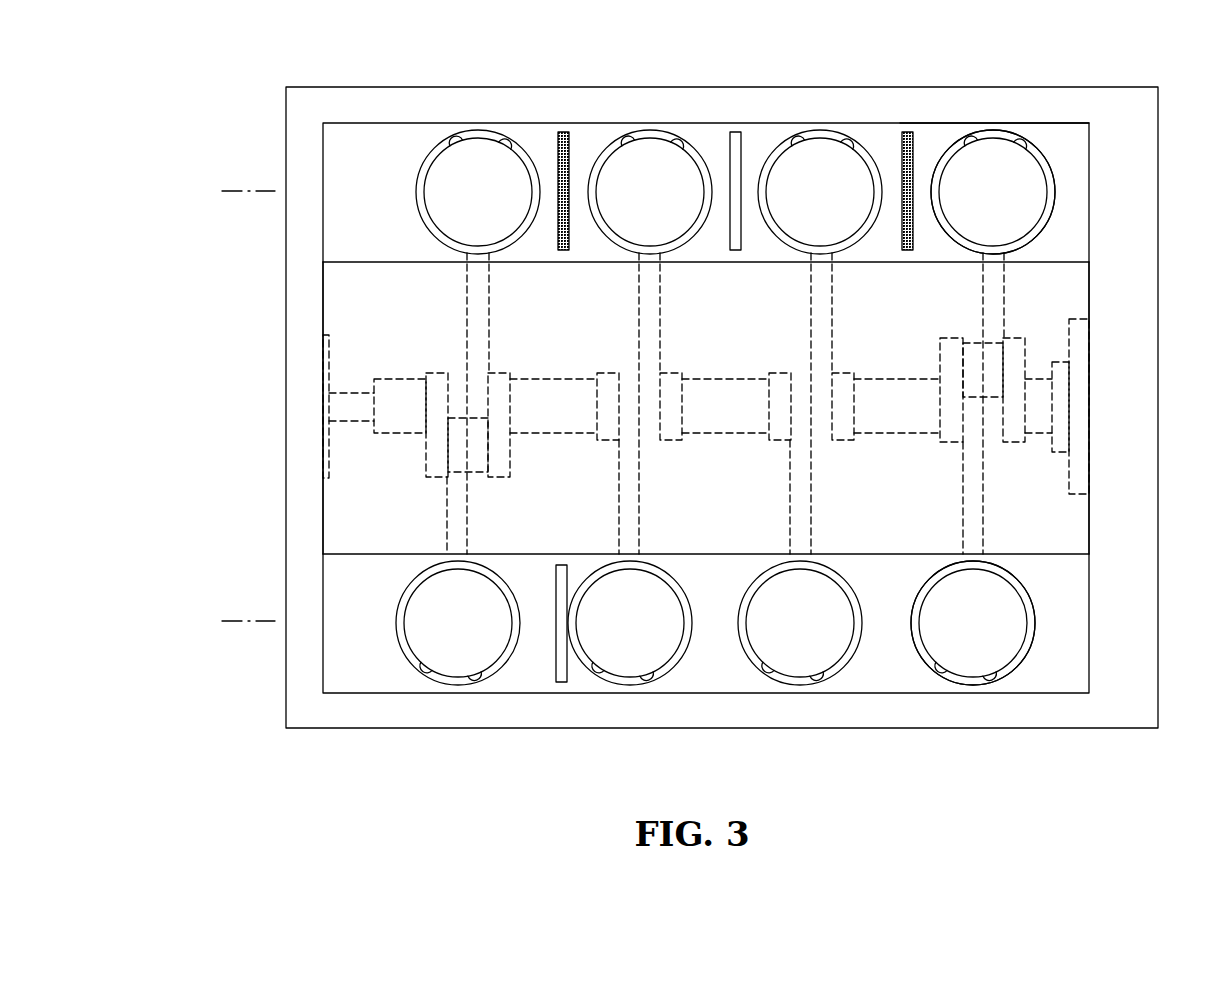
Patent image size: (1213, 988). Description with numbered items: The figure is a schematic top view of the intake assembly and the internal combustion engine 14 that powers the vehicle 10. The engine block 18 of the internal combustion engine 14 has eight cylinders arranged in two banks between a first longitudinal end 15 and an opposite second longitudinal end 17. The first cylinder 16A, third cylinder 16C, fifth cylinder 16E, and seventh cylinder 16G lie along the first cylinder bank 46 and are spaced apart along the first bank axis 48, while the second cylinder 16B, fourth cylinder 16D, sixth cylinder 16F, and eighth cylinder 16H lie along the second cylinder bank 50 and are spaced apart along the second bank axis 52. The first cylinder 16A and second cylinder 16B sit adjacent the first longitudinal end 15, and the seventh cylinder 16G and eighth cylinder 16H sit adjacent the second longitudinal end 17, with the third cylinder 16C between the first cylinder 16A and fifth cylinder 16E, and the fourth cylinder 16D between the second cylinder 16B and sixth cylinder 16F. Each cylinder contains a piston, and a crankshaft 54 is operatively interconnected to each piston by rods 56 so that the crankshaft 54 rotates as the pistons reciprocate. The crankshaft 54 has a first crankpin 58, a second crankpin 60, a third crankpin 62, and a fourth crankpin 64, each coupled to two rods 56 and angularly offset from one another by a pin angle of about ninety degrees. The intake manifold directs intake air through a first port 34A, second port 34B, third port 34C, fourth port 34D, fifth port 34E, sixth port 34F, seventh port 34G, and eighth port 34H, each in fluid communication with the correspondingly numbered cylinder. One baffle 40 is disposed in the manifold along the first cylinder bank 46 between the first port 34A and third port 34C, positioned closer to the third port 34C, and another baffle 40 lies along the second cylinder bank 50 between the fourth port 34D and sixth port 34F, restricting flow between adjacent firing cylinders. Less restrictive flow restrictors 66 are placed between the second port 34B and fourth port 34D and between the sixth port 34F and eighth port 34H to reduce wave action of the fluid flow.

The vehicle 10 is at (828, 84).
The internal combustion engine 14 is at (393, 120).
The first longitudinal end 15 is at (323, 520).
The second longitudinal end 17 is at (1090, 528).
The engine block 18 is at (1052, 120).
The first cylinder 16A is at (480, 682).
The second cylinder 16B is at (455, 133).
The third cylinder 16C is at (652, 682).
The fourth cylinder 16D is at (627, 133).
The fifth cylinder 16E is at (822, 682).
The sixth cylinder 16F is at (797, 133).
The seventh cylinder 16G is at (997, 682).
The eighth cylinder 16H is at (970, 133).
The first port 34A is at (431, 666).
The second port 34B is at (504, 148).
The third port 34C is at (603, 666).
The fourth port 34D is at (676, 148).
The fifth port 34E is at (773, 666).
The sixth port 34F is at (846, 148).
The seventh port 34G is at (945, 666).
The eighth port 34H is at (1019, 148).
The baffle 40 is at (743, 148).
The first cylinder bank 46 is at (1038, 622).
The first bank axis 48 is at (238, 618).
The second cylinder bank 50 is at (1058, 190).
The second bank axis 52 is at (238, 188).
The crankshaft 54 is at (355, 393).
The rods 56 is at (489, 318).
The first crankpin 58 is at (458, 418).
The second crankpin 60 is at (610, 380).
The third crankpin 62 is at (782, 380).
The fourth crankpin 64 is at (975, 345).
The flow restrictor 66 is at (571, 148).